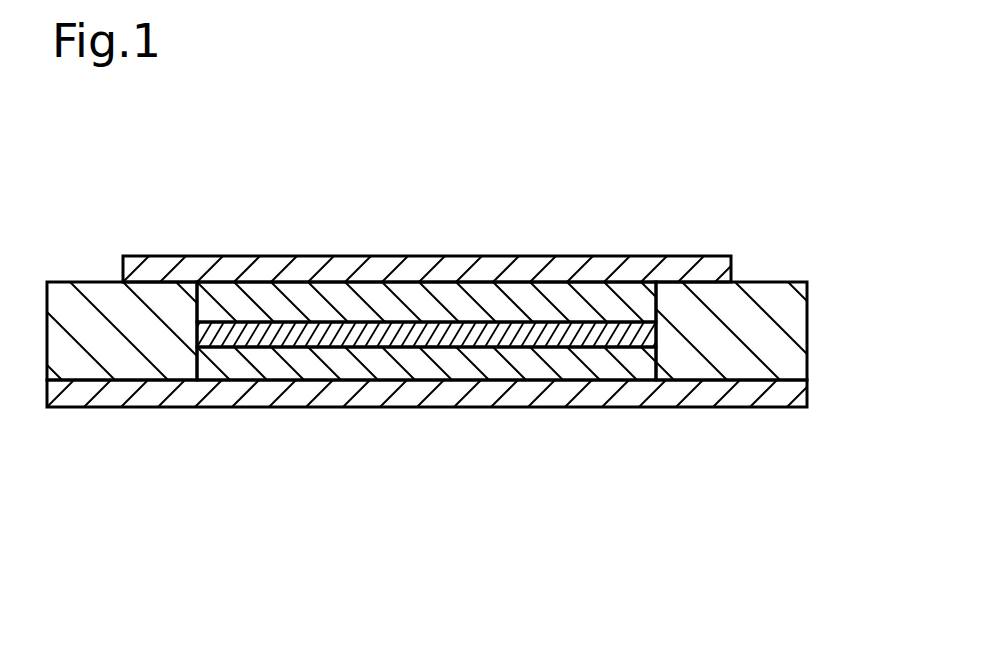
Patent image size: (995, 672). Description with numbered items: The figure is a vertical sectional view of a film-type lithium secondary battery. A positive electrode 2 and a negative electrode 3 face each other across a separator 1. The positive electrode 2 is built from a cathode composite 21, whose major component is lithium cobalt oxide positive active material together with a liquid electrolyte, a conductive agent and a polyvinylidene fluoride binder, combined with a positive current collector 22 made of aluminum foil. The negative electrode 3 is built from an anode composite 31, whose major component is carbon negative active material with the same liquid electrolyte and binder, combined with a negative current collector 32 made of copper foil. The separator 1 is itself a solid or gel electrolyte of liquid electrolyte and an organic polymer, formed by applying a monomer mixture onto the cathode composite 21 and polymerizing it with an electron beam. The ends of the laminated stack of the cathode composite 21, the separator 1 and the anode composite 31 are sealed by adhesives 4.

The separator 1 is at (558, 328).
The positive electrode 2 is at (427, 227).
The cathode composite 21 is at (402, 293).
The positive current collector 22 is at (378, 268).
The negative electrode 3 is at (427, 453).
The anode composite 31 is at (357, 365).
The negative current collector 32 is at (293, 397).
The adhesives 4 is at (133, 362).